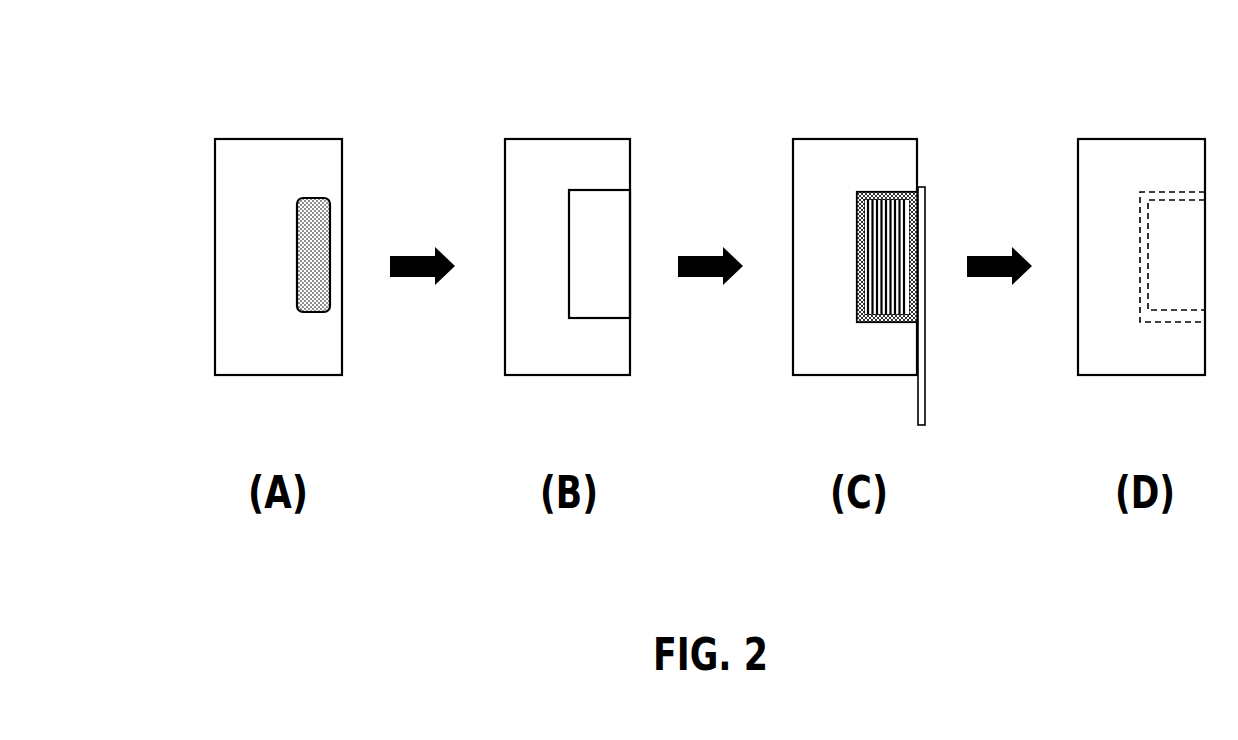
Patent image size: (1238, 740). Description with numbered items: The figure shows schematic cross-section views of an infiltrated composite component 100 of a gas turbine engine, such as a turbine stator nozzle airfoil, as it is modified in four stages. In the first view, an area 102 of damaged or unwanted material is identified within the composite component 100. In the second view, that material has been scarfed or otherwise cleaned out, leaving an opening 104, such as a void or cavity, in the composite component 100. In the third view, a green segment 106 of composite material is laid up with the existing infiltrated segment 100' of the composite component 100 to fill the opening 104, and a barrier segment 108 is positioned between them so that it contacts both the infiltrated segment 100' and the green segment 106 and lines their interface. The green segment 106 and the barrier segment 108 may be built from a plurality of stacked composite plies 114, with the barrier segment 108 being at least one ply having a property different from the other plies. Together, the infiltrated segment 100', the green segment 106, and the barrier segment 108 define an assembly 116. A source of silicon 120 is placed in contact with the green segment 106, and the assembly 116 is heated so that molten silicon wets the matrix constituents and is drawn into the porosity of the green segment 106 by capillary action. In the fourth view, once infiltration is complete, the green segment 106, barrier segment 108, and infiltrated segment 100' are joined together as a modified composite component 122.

The composite component 100 is at (397, 199).
The area of damaged or unwanted material 102 is at (320, 240).
The opening 104 is at (612, 232).
The assembly 116 is at (849, 86).
The infiltrated segment 100' is at (822, 127).
The green segment 106 is at (910, 282).
The barrier segment 108 is at (917, 320).
The composite plies 114 is at (869, 194).
The source of silicon 120 is at (922, 388).
The modified composite component 122 is at (1110, 165).